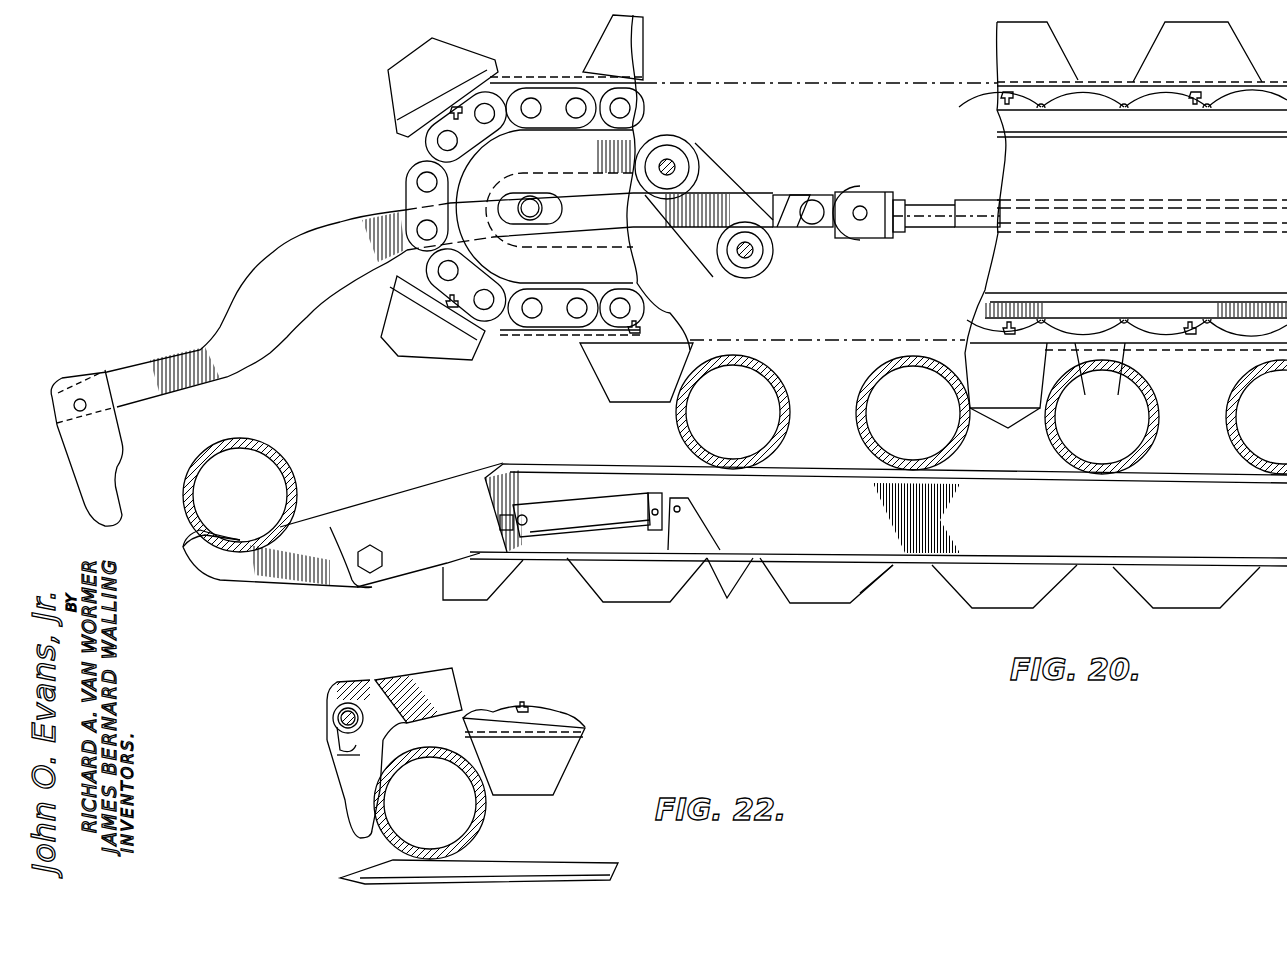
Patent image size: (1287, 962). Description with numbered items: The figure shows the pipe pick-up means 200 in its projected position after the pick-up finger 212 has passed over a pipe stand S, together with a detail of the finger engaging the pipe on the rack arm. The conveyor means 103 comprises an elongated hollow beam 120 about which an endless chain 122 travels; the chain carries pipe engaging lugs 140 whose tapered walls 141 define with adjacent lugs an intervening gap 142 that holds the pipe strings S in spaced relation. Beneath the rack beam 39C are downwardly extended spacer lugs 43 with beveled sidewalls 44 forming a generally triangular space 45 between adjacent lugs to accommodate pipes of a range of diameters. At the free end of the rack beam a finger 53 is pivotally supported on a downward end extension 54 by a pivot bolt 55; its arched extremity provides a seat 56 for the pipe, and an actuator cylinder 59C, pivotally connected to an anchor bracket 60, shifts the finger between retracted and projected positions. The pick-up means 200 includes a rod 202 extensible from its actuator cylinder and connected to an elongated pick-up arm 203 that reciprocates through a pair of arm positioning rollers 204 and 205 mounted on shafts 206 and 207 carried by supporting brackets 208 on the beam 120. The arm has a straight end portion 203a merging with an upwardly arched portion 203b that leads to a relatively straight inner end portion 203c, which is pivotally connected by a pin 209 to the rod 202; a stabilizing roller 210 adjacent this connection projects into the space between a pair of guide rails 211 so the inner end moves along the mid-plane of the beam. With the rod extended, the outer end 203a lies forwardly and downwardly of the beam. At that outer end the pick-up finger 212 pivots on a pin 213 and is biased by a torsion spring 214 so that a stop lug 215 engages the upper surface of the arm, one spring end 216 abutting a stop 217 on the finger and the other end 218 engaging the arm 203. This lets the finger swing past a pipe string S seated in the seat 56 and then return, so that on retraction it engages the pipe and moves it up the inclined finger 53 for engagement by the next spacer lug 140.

In FIG. 20, the conveyor means 103 is at (975, 54).
In FIG. 20, the elongated hollow beam 120 is at (965, 187).
In FIG. 20, the endless chain 122 is at (545, 95).
In FIG. 22, the endless chain 122 is at (548, 713).
In FIG. 20, the pipe engaging lug 140 is at (395, 335).
In FIG. 22, the pipe engaging lug 140 is at (560, 752).
In FIG. 20, the tapered wall 141 is at (1005, 431).
In FIG. 20, the intervening gap 142 is at (1105, 365).
In FIG. 20, the pick-up means 200 is at (790, 158).
In FIG. 20, the rod 202 is at (925, 200).
In FIG. 20, the pick-up arm 203 is at (258, 250).
In FIG. 22, the pick-up arm 203 is at (468, 694).
In FIG. 20, the straight end portion 203a is at (152, 345).
In FIG. 20, the upwardly arched portion 203b is at (303, 222).
In FIG. 20, the inner end portion 203c is at (660, 232).
In FIG. 20, the arm positioning roller 204 is at (680, 145).
In FIG. 20, the arm positioning roller 205 is at (755, 248).
In FIG. 20, the shaft 206 is at (675, 165).
In FIG. 20, the shaft 207 is at (752, 258).
In FIG. 20, the supporting bracket 208 is at (715, 262).
In FIG. 20, the pin 209 is at (868, 222).
In FIG. 20, the stabilizing roller 210 is at (838, 198).
In FIG. 20, the guide rail 211 is at (812, 182).
In FIG. 20, the pick-up finger 212 is at (122, 432).
In FIG. 22, the pick-up finger 212 is at (348, 802).
In FIG. 20, the pin 213 is at (78, 410).
In FIG. 22, the pin 213 is at (348, 710).
In FIG. 22, the torsion spring 214 is at (333, 715).
In FIG. 20, the stop lug 215 is at (98, 368).
In FIG. 22, the stop lug 215 is at (380, 680).
In FIG. 22, the spring end 216 is at (340, 765).
In FIG. 22, the stop 217 is at (333, 742).
In FIG. 22, the spring end 218 is at (395, 725).
In FIG. 20, the rack beam 39C is at (878, 515).
In FIG. 22, the rack beam 39C is at (575, 860).
In FIG. 20, the spacer lug 43 is at (1140, 592).
In FIG. 20, the beveled sidewall 44 is at (720, 585).
In FIG. 20, the triangular space 45 is at (910, 578).
In FIG. 20, the finger 53 is at (310, 574).
In FIG. 20, the downward end extension 54 is at (443, 490).
In FIG. 20, the pivot bolt 55 is at (385, 553).
In FIG. 20, the seat 56 is at (223, 552).
In FIG. 20, the actuator cylinder 59C is at (585, 500).
In FIG. 20, the anchor bracket 60 is at (700, 530).
In FIG. 20, the pipe stand S is at (285, 468).
In FIG. 22, the pipe stand S is at (487, 823).